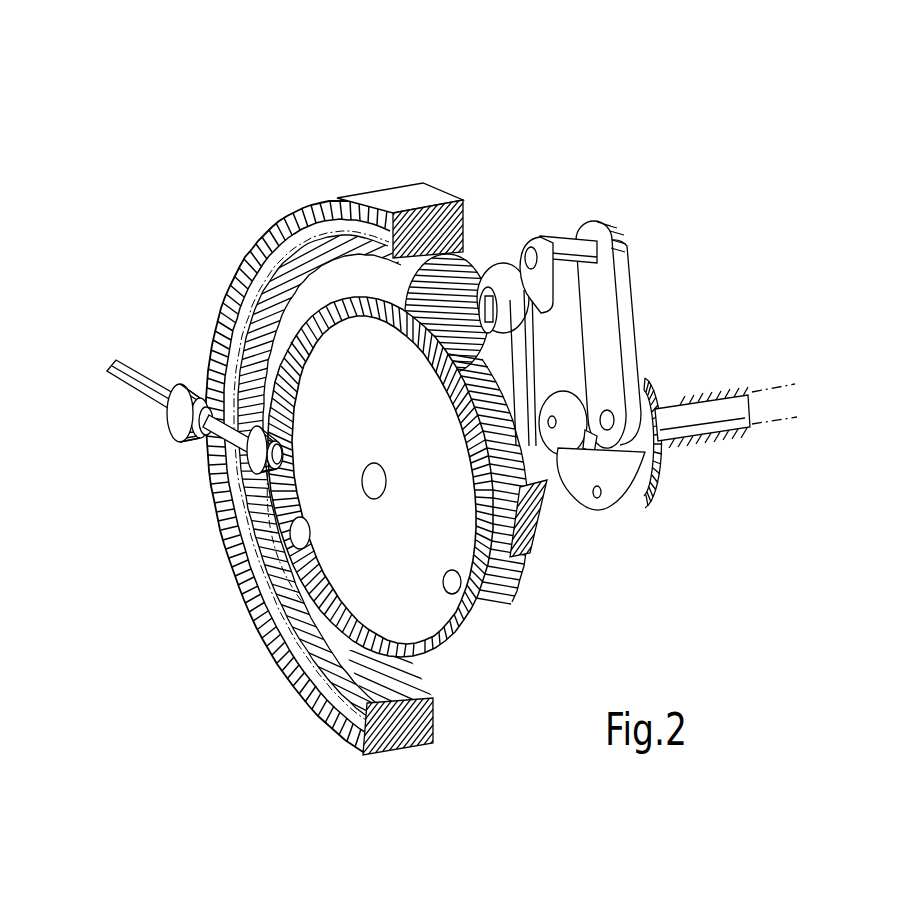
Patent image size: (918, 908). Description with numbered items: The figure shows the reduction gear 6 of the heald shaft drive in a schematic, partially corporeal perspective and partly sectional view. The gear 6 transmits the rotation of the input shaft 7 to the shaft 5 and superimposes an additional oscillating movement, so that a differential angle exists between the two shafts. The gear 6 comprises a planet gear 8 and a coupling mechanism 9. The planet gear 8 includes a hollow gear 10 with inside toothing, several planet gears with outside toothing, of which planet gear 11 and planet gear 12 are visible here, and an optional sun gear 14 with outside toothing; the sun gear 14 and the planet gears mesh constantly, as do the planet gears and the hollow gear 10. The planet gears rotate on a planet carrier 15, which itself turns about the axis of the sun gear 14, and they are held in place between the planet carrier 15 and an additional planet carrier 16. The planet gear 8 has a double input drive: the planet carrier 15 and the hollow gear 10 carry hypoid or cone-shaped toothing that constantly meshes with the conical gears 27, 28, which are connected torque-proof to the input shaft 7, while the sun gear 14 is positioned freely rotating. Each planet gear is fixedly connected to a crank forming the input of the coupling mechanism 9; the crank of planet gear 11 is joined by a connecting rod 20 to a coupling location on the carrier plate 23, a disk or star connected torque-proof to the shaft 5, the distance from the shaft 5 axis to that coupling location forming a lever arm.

The gear 6 is at (440, 95).
The planet gear 8 is at (455, 182).
The coupling mechanism 9 is at (550, 178).
The planet gear 11 is at (453, 285).
The connecting rod 20 is at (612, 287).
The input shaft 7 is at (132, 373).
The conical gear 27 is at (170, 437).
The conical gear 28 is at (283, 433).
The planet carrier 15 is at (440, 478).
The planet gear 12 is at (330, 496).
The hollow gear 10 is at (437, 725).
The additional planet carrier 16 is at (538, 532).
The sun gear 14 is at (518, 555).
The carrier plate 23 is at (640, 477).
The shaft 5 is at (745, 434).